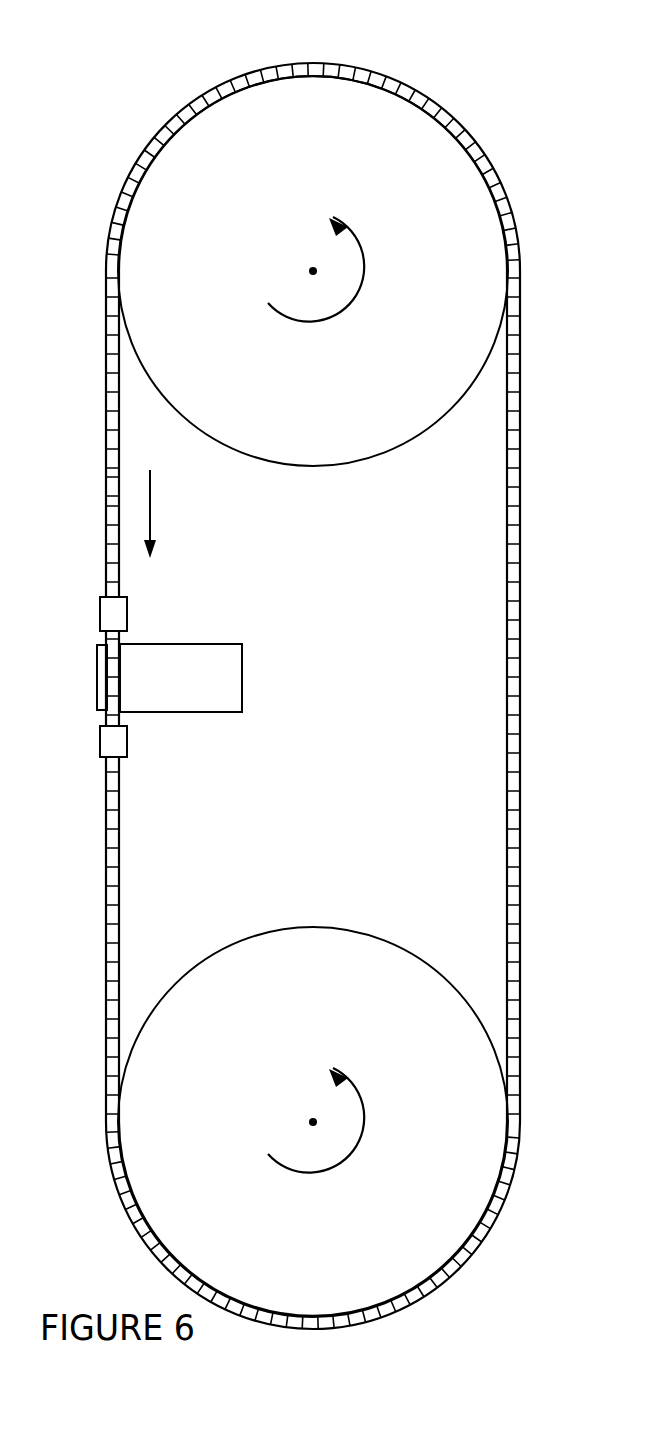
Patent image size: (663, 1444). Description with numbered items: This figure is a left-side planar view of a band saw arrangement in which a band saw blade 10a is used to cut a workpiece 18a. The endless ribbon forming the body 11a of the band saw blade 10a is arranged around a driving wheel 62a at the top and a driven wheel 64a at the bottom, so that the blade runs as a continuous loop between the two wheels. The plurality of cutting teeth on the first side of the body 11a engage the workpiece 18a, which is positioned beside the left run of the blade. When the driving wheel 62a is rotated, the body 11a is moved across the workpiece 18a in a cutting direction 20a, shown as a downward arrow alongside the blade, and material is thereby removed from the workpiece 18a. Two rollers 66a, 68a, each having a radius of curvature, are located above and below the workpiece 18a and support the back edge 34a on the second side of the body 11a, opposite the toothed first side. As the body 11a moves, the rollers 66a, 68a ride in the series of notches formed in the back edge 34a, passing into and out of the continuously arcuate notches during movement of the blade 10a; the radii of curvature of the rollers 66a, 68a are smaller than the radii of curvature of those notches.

The band saw blade 10a is at (275, 669).
The body 11a is at (107, 312).
The back edge 34a is at (106, 496).
The cutting direction 20a is at (152, 505).
The driving wheel 62a is at (338, 177).
The driven wheel 64a is at (333, 1040).
The roller 66a is at (100, 613).
The roller 68a is at (100, 733).
The workpiece 18a is at (190, 657).